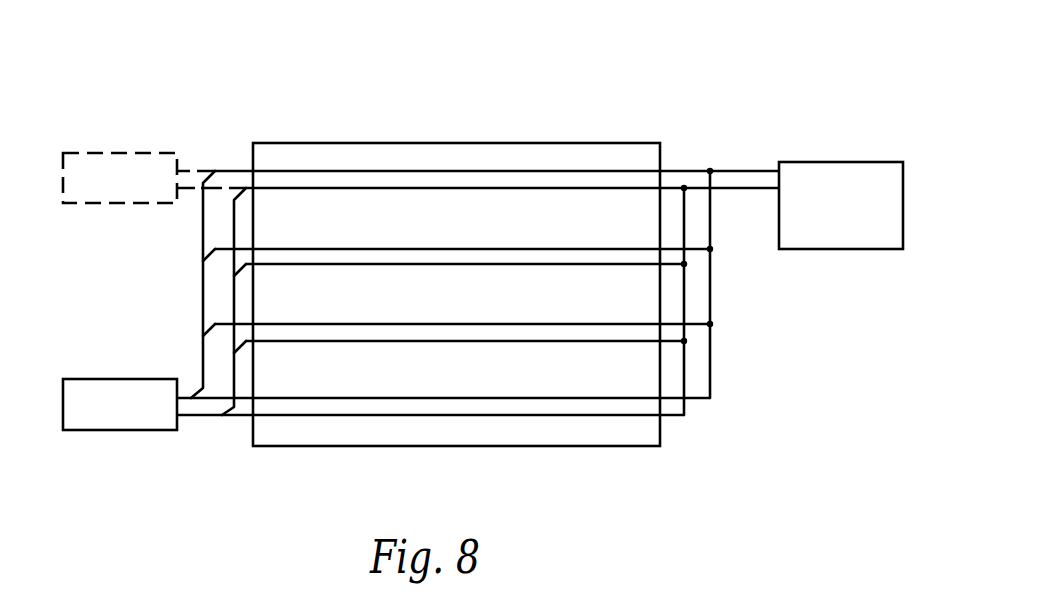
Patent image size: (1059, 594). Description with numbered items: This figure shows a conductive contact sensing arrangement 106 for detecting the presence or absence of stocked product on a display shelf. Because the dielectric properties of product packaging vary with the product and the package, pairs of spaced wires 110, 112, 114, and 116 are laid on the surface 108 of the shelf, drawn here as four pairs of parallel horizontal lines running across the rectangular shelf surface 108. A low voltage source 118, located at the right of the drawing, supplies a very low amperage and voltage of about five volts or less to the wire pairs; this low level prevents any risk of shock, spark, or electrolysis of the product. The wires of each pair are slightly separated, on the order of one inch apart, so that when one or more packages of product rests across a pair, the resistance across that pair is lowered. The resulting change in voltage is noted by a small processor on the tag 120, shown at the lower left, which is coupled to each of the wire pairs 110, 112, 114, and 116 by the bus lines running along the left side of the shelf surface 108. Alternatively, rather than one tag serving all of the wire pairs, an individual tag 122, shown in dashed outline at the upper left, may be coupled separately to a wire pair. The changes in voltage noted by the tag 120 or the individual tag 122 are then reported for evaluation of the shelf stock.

The electrostatic chuck system 106 is at (84, 100).
The surface 108 is at (575, 143).
The pair of spaced wires 110 is at (473, 172).
The pair of spaced wires 112 is at (323, 250).
The pair of spaced wires 114 is at (433, 325).
The pair of spaced wires 116 is at (560, 415).
The source 118 is at (828, 162).
The tag 120 is at (108, 379).
The individual tag 122 is at (115, 153).